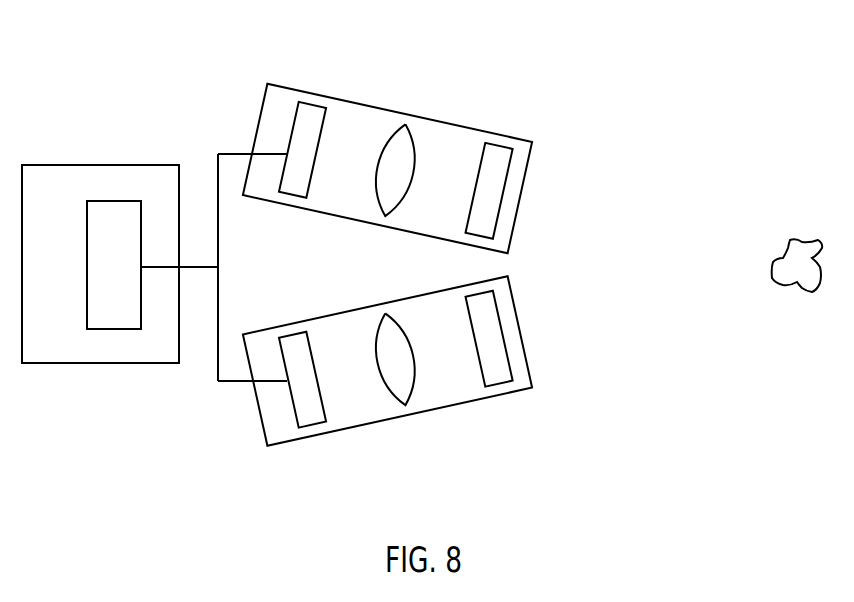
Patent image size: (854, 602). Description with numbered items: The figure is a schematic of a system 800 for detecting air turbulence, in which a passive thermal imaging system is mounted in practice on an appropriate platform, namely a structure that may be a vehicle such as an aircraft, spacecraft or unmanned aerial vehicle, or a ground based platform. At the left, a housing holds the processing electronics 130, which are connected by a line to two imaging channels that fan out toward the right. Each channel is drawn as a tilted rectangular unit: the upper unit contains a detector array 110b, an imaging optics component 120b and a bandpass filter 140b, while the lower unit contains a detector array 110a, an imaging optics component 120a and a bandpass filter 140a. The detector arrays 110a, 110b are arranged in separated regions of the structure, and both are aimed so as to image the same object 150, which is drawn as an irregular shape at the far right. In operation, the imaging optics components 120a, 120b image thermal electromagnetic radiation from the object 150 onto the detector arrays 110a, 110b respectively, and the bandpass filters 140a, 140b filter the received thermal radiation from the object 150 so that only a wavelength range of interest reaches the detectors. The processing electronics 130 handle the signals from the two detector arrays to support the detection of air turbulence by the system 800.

The system for detecting air turbulence 800 is at (93, 365).
The processing electronics 130 is at (93, 227).
The detector array 110a is at (310, 420).
The detector array 110b is at (310, 110).
The imaging optics component 120a is at (403, 400).
The imaging optics component 120b is at (403, 128).
The bandpass filter 140a is at (495, 378).
The bandpass filter 140b is at (495, 148).
The object of interest 150 is at (802, 242).